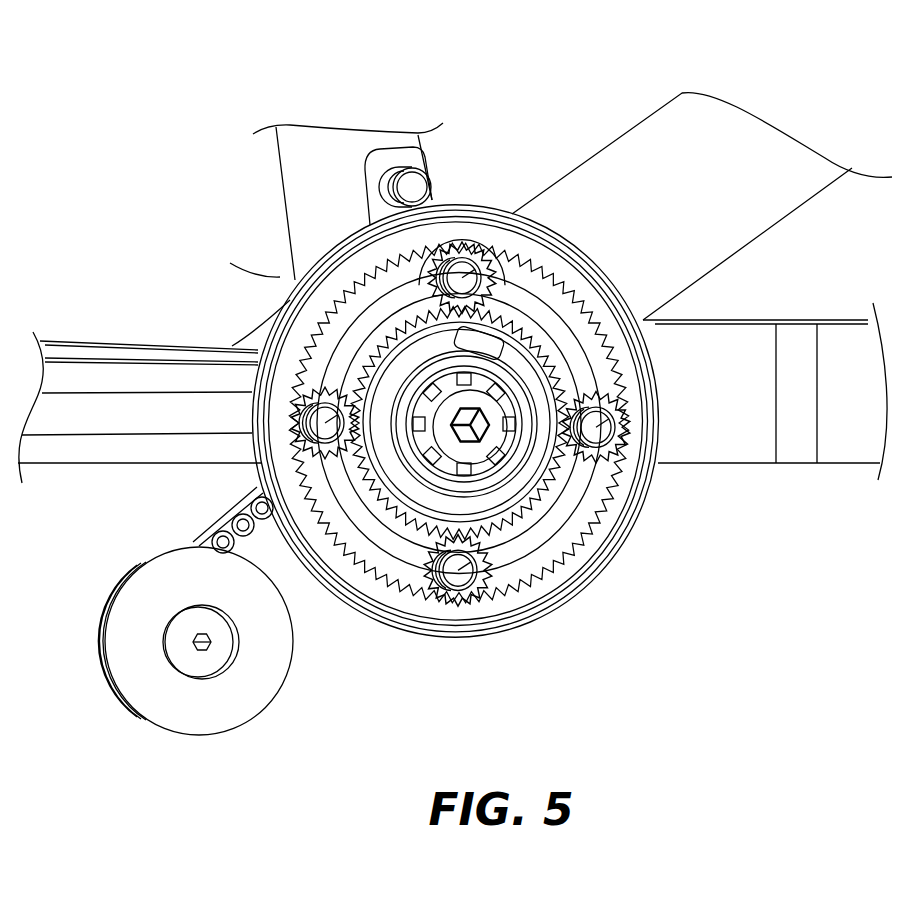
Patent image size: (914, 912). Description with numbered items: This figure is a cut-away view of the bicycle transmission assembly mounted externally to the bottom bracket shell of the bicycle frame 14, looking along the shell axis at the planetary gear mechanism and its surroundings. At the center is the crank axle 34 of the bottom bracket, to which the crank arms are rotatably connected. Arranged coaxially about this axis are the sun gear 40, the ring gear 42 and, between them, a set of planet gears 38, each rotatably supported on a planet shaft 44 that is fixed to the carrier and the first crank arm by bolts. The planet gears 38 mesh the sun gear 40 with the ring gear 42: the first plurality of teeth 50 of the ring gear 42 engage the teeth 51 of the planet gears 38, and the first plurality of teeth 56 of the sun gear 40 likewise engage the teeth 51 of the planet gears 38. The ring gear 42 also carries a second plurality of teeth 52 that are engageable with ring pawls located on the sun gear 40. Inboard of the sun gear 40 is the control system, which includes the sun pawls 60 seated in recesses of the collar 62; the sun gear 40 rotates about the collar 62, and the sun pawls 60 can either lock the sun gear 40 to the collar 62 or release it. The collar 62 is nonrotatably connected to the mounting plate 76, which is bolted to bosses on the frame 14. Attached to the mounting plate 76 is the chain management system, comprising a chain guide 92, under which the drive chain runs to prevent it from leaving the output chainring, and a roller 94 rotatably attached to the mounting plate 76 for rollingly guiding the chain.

The bicycle frame 14 is at (648, 135).
The crank axle 34 is at (490, 500).
The planet gears 38 is at (460, 603).
The sun gear 40 is at (573, 558).
The ring gear 42 is at (433, 610).
The planet shafts 44 is at (466, 572).
The first plurality of teeth of the ring gear 50 is at (332, 307).
The teeth of the planet gears 51 is at (456, 250).
The second plurality of teeth of the ring gear 52 is at (502, 413).
The first plurality of teeth of the sun gear 56 is at (548, 300).
The sun pawls 60 is at (478, 494).
The collar 62 is at (545, 512).
The mounting plate 76 is at (298, 595).
The chain guide 92 is at (410, 188).
The roller 94 is at (232, 700).